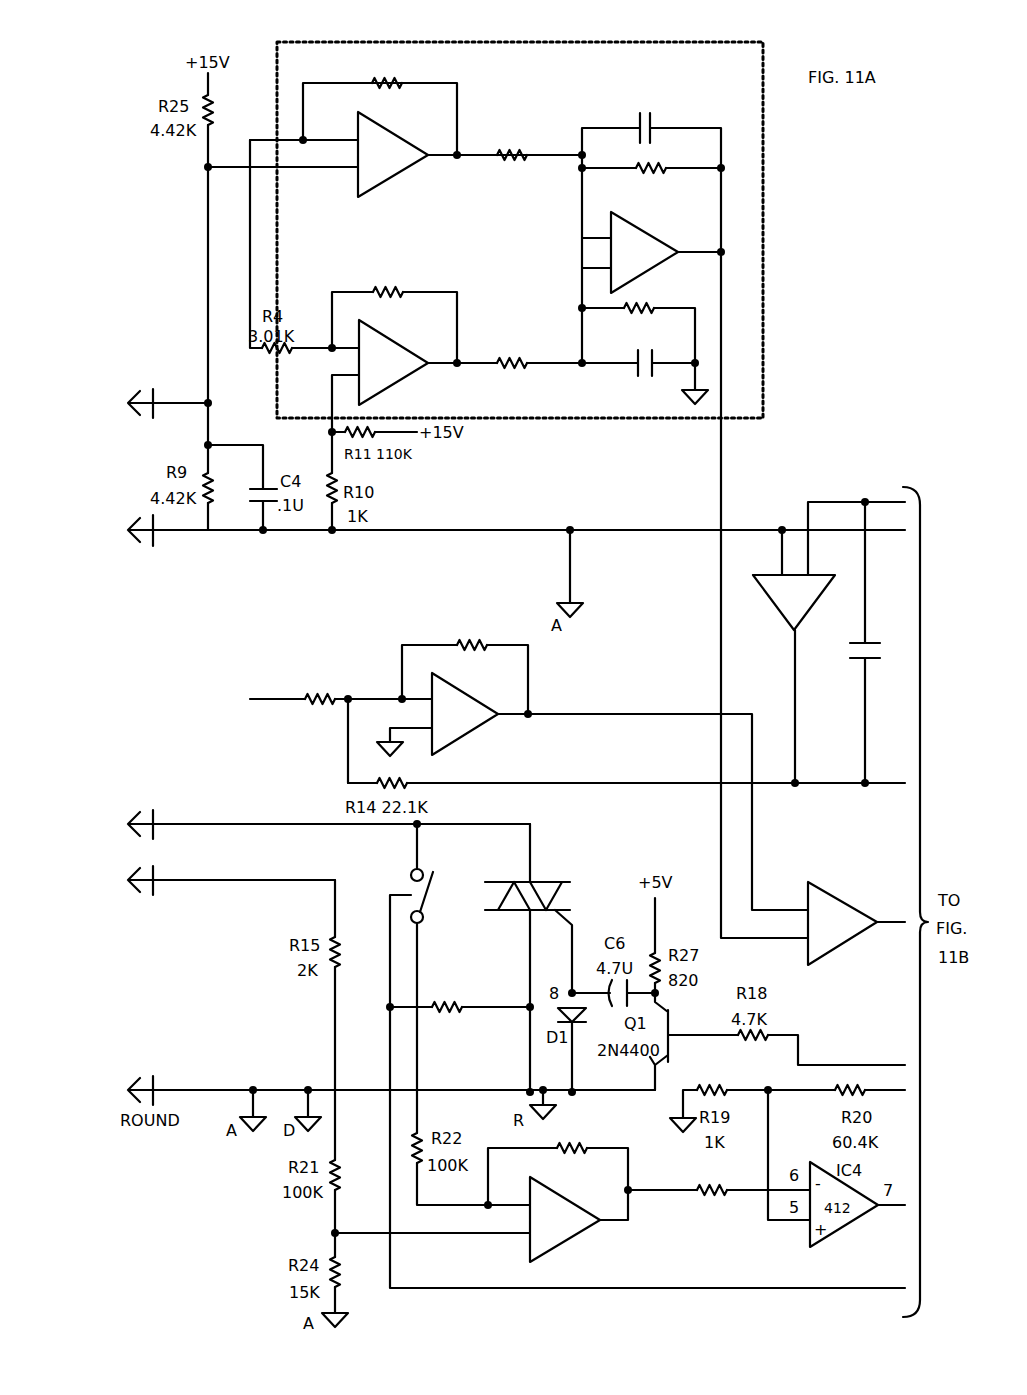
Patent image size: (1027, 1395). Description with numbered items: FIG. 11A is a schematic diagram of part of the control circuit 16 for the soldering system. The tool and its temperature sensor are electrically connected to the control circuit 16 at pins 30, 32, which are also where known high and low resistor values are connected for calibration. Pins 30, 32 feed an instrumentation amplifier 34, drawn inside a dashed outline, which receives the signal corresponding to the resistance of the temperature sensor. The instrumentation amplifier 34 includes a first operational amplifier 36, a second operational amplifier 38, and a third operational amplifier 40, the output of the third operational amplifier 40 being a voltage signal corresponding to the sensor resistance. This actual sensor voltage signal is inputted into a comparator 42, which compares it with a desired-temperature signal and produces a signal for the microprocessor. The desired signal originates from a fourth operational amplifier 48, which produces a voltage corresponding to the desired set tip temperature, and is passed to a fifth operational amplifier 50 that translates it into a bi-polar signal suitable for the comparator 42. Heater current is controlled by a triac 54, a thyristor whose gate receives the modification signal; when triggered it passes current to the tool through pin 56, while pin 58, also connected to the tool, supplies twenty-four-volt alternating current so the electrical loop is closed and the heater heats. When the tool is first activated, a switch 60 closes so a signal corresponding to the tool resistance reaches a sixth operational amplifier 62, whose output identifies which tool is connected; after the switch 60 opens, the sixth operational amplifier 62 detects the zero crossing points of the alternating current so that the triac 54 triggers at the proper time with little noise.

The control circuit 16 is at (858, 213).
The pin 30 is at (147, 398).
The pin 32 is at (148, 521).
The instrumentation amplifier 34 is at (764, 188).
The first operational amplifier 36 is at (392, 177).
The second operational amplifier 38 is at (385, 331).
The third operational amplifier 40 is at (645, 268).
The comparator 42 is at (850, 905).
The fourth operational amplifier 48 is at (785, 605).
The fifth operational amplifier 50 is at (462, 735).
The triac 54 is at (532, 870).
The pin 56 is at (148, 830).
The pin 58 is at (150, 886).
The switch 60 is at (645, 1054).
The sixth operational amplifier 62 is at (560, 1240).